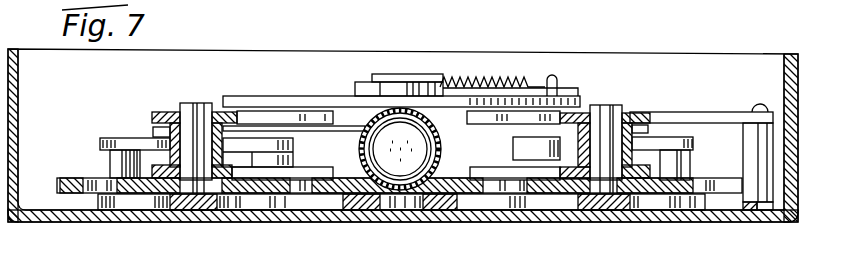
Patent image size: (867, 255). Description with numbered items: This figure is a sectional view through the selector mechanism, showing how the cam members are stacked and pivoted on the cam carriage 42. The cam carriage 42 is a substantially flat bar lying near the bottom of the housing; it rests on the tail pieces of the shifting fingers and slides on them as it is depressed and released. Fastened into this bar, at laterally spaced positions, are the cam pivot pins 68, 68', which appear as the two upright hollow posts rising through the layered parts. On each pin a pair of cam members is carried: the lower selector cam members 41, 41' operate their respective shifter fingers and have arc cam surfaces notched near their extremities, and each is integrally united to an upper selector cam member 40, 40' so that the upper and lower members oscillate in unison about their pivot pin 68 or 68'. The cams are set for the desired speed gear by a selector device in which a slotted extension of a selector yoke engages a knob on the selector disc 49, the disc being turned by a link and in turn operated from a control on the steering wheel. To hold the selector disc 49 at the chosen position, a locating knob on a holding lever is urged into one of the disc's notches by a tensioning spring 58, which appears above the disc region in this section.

The cam pivot pin 68' is at (194, 130).
The upper selector cam member 40' is at (285, 96).
The selector disc 49 is at (332, 98).
The tensioning spring 58 is at (503, 82).
The upper selector cam member 40 is at (498, 119).
The lower selector cam member 41' is at (282, 162).
The lower selector cam member 41 is at (506, 161).
The cam pivot pin 68 is at (605, 137).
The cam carriage 42 is at (323, 199).